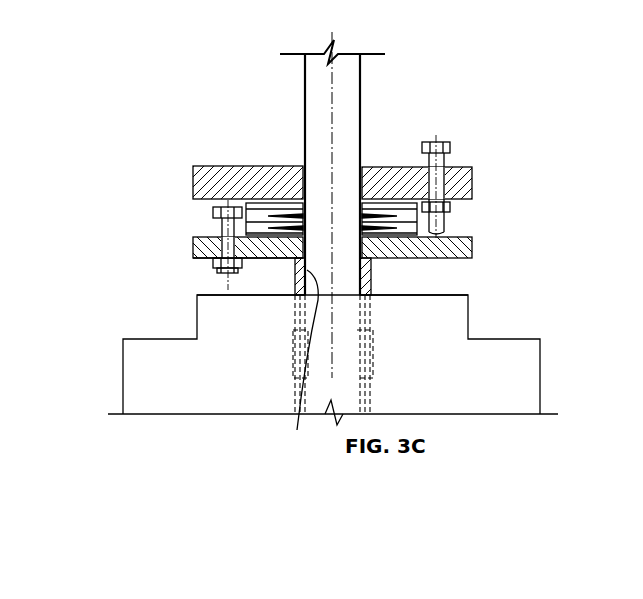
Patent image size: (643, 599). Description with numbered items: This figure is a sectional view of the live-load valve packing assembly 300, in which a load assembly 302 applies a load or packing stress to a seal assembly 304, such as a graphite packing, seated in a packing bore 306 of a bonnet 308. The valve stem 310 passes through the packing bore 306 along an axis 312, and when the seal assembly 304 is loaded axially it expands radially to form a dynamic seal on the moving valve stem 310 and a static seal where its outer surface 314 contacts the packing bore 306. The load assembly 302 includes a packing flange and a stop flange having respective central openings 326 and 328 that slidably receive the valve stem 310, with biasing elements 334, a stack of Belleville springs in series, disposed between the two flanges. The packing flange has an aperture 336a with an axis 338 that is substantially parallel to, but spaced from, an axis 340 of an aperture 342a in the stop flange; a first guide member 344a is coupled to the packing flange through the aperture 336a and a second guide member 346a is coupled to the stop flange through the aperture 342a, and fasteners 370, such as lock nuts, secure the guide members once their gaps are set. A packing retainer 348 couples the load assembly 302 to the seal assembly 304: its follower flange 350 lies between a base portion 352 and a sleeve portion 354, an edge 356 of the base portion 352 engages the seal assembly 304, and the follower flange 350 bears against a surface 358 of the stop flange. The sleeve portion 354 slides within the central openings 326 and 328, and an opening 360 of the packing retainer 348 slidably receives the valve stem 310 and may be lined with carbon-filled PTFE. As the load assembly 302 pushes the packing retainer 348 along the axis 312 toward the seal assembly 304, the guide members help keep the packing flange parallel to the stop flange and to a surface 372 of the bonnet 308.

The valve packing assembly 300 is at (550, 89).
The load assembly 302 is at (486, 214).
The seal assembly 304 is at (293, 360).
The packing bore 306 is at (373, 366).
The bonnet 308 is at (542, 348).
The valve stem 310 is at (362, 68).
The axis 312 is at (332, 82).
The outer surface 314 is at (373, 338).
The central opening 326 is at (303, 167).
The central opening 328 is at (303, 258).
The biasing elements 334 is at (397, 204).
The aperture 336a is at (455, 182).
The axis 338 is at (446, 140).
The axis 340 is at (226, 283).
The aperture 342a is at (200, 237).
The first guide member 344a is at (452, 152).
The second guide member 346a is at (212, 213).
The packing retainer 348 is at (372, 288).
The follower flange 350 is at (372, 262).
The base portion 352 is at (372, 316).
The sleeve portion 354 is at (358, 212).
The edge 356 is at (292, 320).
The surface 358 is at (203, 259).
The opening 360 is at (299, 363).
The fasteners 370 is at (214, 272).
The surface 372 is at (452, 297).